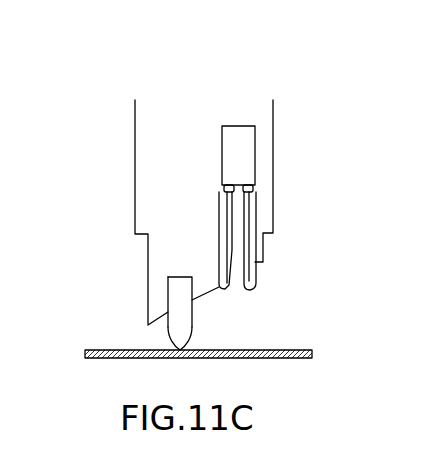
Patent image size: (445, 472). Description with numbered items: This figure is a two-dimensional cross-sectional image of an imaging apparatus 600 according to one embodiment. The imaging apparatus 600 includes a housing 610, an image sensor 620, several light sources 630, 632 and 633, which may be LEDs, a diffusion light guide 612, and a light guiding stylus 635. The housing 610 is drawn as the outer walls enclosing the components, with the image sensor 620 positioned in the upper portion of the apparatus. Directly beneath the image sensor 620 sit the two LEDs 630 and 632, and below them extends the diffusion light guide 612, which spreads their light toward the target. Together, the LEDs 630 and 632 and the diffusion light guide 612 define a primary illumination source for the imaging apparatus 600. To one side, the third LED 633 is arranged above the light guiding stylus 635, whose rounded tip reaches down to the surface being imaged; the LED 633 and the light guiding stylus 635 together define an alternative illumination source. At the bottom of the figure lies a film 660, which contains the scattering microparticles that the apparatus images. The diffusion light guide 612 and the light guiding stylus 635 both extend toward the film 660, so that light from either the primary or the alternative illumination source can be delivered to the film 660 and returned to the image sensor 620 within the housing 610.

The imaging apparatus 600 is at (102, 68).
The housing 610 is at (135, 137).
The image sensor 620 is at (257, 142).
The light source 630 is at (257, 187).
The light source 632 is at (221, 186).
The diffusion light guide 612 is at (221, 220).
The light source 633 is at (166, 283).
The light guiding stylus 635 is at (167, 328).
The film 660 is at (257, 350).